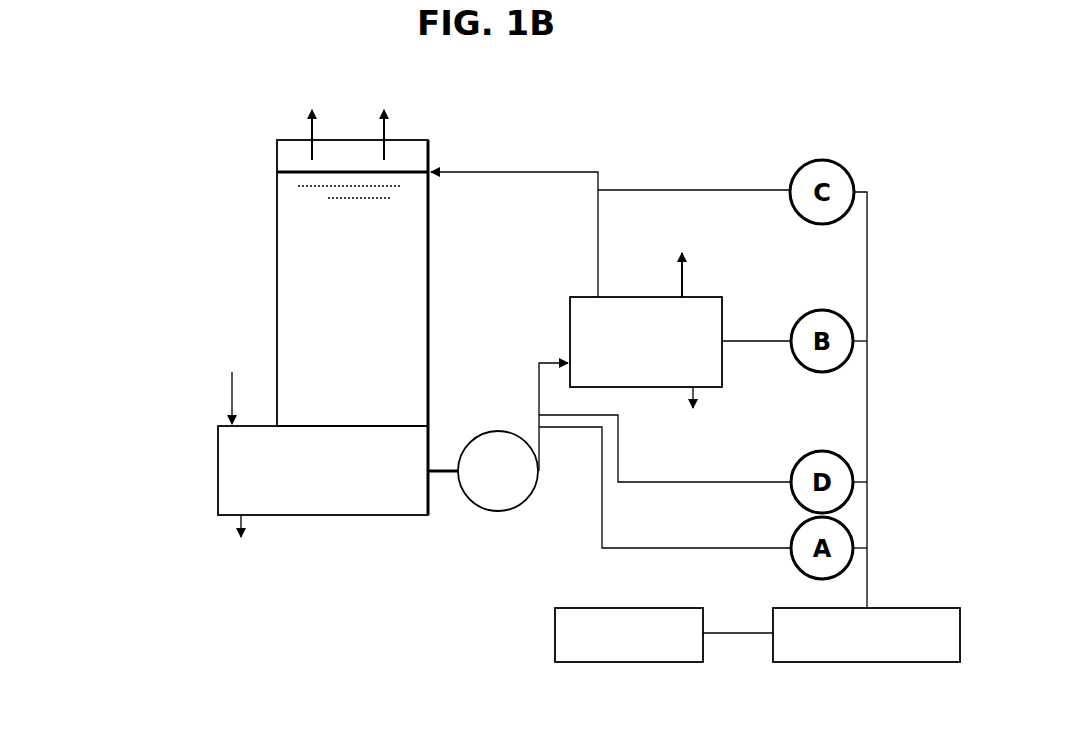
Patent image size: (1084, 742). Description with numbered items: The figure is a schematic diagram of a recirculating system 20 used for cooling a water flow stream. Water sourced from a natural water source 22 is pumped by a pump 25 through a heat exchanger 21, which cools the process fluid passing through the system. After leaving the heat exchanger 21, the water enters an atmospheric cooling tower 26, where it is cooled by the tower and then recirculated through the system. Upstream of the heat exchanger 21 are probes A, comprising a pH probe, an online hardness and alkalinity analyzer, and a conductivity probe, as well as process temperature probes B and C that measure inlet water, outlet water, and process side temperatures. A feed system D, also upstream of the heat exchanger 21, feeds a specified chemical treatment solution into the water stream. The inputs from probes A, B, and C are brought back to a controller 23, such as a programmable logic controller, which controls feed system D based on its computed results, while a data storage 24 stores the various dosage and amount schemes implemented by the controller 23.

The recirculating system 20 is at (205, 200).
The heat exchanger 21 is at (633, 339).
The natural water source 22 is at (305, 484).
The controller 23 is at (854, 646).
The data storage 24 is at (616, 646).
The pump 25 is at (485, 482).
The atmospheric cooling tower 26 is at (340, 284).